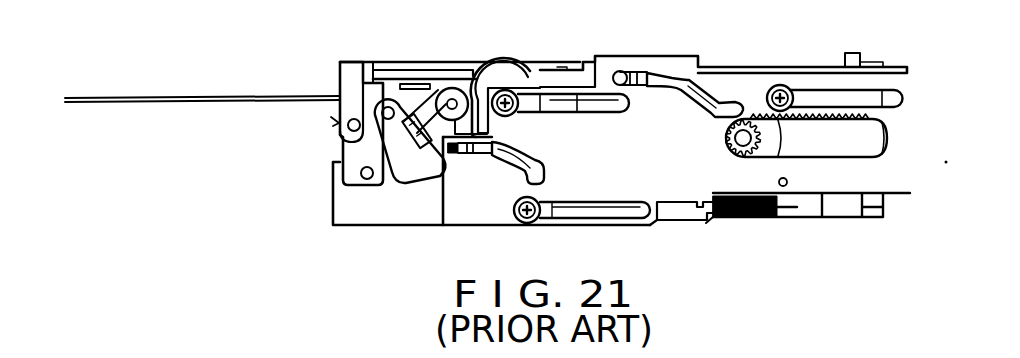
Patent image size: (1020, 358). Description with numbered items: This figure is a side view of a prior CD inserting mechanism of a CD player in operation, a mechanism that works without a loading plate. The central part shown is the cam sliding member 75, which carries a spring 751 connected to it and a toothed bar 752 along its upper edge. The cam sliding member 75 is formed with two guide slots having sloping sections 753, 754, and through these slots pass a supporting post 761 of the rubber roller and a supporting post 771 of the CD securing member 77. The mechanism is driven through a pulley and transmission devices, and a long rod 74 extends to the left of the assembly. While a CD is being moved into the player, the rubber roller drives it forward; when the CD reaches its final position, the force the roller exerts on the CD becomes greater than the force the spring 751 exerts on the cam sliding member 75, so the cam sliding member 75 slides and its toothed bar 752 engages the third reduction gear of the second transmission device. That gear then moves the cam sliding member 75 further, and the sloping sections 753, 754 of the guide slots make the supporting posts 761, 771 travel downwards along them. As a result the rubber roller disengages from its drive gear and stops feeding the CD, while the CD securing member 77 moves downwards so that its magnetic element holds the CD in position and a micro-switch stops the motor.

The rod 74 is at (183, 103).
The cam sliding member 75 is at (688, 66).
The CD securing member 77 is at (458, 58).
The spring 751 is at (735, 217).
The toothed bar 752 is at (830, 121).
The sloping section 753 is at (665, 82).
The sloping section 754 is at (494, 160).
The supporting post 761 is at (457, 153).
The supporting post 771 is at (620, 71).